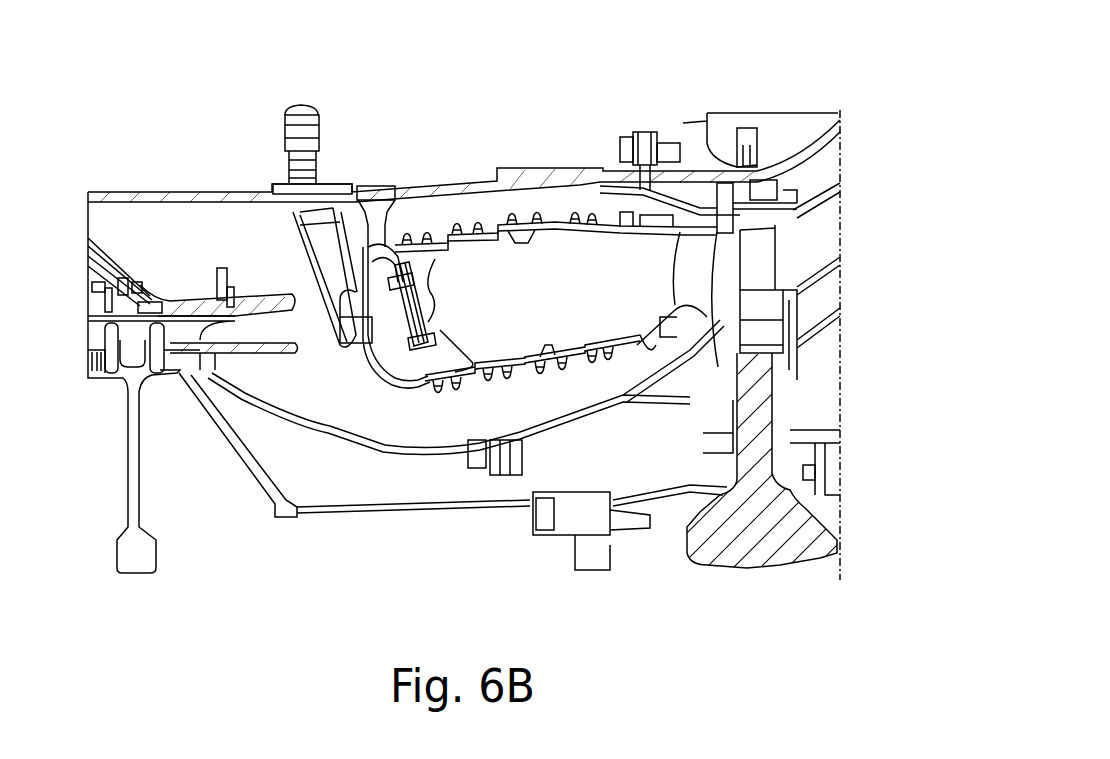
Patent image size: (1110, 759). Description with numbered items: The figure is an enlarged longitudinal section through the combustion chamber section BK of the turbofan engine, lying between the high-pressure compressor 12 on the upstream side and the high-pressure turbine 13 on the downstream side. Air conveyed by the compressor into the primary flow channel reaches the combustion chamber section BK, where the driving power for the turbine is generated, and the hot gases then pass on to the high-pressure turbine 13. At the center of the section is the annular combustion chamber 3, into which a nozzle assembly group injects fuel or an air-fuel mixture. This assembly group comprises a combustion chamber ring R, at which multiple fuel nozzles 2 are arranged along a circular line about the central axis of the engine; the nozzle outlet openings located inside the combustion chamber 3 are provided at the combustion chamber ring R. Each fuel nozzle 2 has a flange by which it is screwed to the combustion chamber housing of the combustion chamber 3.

The combustion chamber 3 is at (488, 226).
The high-pressure compressor 12 is at (102, 330).
The high-pressure turbine 13 is at (818, 228).
The combustion chamber ring R is at (428, 360).
The combustion chamber section BK is at (359, 101).
The fuel nozzle 2 is at (331, 338).